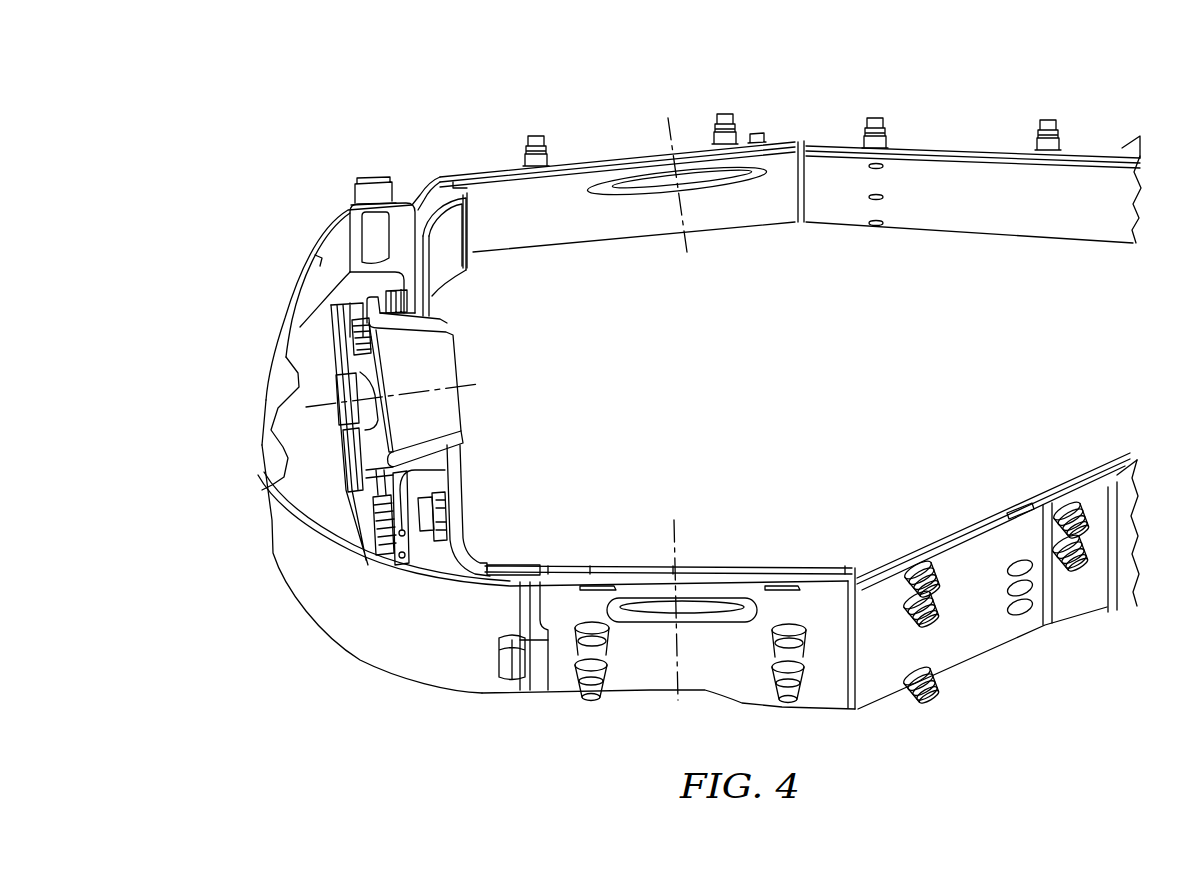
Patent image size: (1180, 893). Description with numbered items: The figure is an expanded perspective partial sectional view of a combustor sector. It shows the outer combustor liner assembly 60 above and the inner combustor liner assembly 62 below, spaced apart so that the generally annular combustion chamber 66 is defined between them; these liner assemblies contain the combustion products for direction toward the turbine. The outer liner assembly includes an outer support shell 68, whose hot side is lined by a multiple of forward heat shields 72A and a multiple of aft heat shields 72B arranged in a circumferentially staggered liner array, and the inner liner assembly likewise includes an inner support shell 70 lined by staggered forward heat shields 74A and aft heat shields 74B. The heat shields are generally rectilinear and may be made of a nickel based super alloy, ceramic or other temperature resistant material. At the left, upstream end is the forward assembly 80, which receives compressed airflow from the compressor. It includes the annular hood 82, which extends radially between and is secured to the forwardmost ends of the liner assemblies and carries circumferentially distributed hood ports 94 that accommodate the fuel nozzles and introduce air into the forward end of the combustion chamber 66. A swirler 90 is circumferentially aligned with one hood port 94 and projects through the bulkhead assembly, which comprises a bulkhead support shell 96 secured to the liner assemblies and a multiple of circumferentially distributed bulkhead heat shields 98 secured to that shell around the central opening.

The outer combustor liner assembly 60 is at (947, 94).
The inner combustor liner assembly 62 is at (972, 700).
The combustion chamber 66 is at (803, 373).
The outer support shell 68 is at (782, 137).
The inner support shell 70 is at (657, 668).
The forward heat shields 72A is at (718, 215).
The aft heat shields 72B is at (963, 217).
The forward heat shields 74A is at (720, 567).
The aft heat shields 74B is at (973, 522).
The forward assembly 80 is at (300, 231).
The annular hood 82 is at (305, 578).
The swirler 90 is at (467, 355).
The hood port 94 is at (261, 405).
The bulkhead support shell 96 is at (445, 565).
The bulkhead heat shields 98 is at (473, 548).